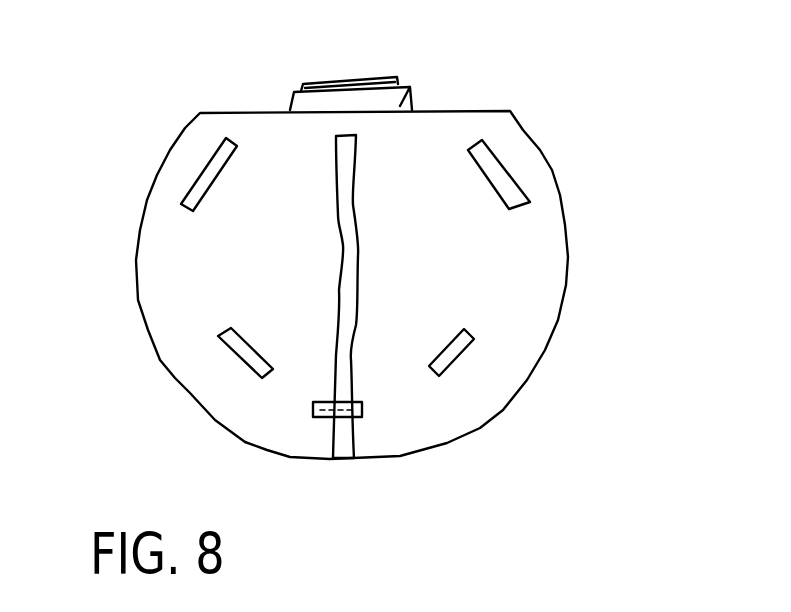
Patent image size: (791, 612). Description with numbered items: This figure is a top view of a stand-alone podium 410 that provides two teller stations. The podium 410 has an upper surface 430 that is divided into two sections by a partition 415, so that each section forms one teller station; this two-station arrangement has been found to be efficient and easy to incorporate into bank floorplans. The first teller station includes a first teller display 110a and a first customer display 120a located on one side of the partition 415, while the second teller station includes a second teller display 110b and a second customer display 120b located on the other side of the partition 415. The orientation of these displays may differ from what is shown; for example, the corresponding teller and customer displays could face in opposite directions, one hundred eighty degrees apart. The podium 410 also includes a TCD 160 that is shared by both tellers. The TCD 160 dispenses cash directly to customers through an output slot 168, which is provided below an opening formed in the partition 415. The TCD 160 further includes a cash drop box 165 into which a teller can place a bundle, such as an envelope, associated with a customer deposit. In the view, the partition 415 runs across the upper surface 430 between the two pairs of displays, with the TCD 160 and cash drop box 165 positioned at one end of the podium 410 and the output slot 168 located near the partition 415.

The first teller display 110a is at (507, 188).
The second teller display 110b is at (197, 183).
The first customer display 120a is at (457, 355).
The second customer display 120b is at (222, 340).
The TCD 160 is at (410, 99).
The cash drop box 165 is at (360, 80).
The output slot 168 is at (318, 418).
The stand alone podium 410 is at (590, 150).
The partition 415 is at (343, 380).
The upper surface 430 is at (510, 288).